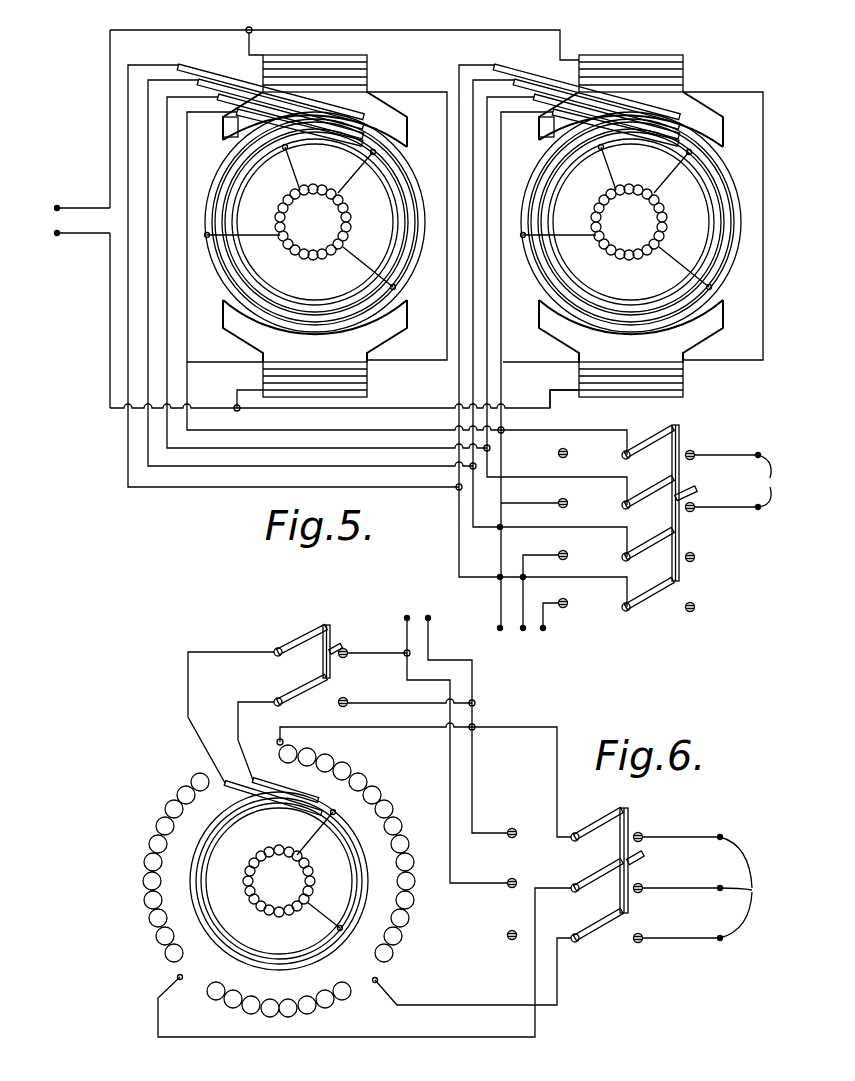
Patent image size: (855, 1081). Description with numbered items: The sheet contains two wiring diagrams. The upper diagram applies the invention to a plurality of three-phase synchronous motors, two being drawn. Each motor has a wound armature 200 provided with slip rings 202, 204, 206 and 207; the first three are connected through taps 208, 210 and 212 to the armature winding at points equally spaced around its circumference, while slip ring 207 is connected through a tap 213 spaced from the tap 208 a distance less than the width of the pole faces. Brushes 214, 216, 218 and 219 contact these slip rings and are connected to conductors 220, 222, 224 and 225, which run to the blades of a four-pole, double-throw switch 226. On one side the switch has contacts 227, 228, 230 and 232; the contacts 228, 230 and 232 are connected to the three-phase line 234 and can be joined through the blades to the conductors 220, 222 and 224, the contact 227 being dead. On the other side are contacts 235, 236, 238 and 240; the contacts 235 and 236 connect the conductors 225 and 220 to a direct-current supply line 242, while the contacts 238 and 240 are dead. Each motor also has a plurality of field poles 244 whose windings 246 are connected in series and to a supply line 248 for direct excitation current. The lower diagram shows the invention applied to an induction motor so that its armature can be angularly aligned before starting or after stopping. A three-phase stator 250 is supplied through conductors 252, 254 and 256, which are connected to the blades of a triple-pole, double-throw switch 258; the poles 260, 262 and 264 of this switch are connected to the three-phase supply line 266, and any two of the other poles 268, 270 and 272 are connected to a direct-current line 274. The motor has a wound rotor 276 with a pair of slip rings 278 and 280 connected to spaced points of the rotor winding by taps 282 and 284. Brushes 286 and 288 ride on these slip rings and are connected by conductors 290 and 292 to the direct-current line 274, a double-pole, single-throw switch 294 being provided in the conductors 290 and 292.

In FIG. 5, the wound armature 200 is at (350, 223).
In FIG. 5, the slip ring 202 is at (255, 292).
In FIG. 5, the slip ring 204 is at (318, 328).
In FIG. 5, the slip ring 206 is at (213, 186).
In FIG. 5, the slip ring 207 is at (243, 265).
In FIG. 5, the tap 208 is at (346, 184).
In FIG. 5, the tap 210 is at (372, 268).
In FIG. 5, the tap 212 is at (261, 234).
In FIG. 5, the tap 213 is at (294, 158).
In FIG. 5, the brush 214 is at (238, 108).
In FIG. 5, the brush 216 is at (212, 80).
In FIG. 5, the brush 218 is at (182, 62).
In FIG. 5, the brush 219 is at (232, 137).
In FIG. 5, the conductor 220 is at (168, 354).
In FIG. 5, the conductor 222 is at (147, 434).
In FIG. 5, the conductor 224 is at (128, 455).
In FIG. 5, the conductor 225 is at (187, 377).
In FIG. 5, the four-pole, double-throw switch 226 is at (677, 432).
In FIG. 5, the contact 227 is at (557, 453).
In FIG. 5, the contact 228 is at (557, 500).
In FIG. 5, the contact 230 is at (558, 552).
In FIG. 5, the contact 232 is at (566, 608).
In FIG. 5, the three-phase line 234 is at (500, 628).
In FIG. 5, the contact 235 is at (696, 452).
In FIG. 5, the contact 236 is at (694, 511).
In FIG. 5, the contact 238 is at (694, 560).
In FIG. 5, the contact 240 is at (694, 611).
In FIG. 5, the D. C. supply line 242 is at (778, 481).
In FIG. 5, the field pole 244 is at (362, 60).
In FIG. 5, the field winding 246 is at (372, 80).
In FIG. 5, the supply line 248 is at (52, 207).
In FIG. 6, the three-phase stator 250 is at (380, 792).
In FIG. 6, the conductor 252 is at (192, 1038).
In FIG. 6, the conductor 254 is at (437, 1003).
In FIG. 6, the conductor 256 is at (355, 730).
In FIG. 6, the triple-pole, double-throw switch 258 is at (630, 816).
In FIG. 6, the pole 260 is at (642, 842).
In FIG. 6, the pole 262 is at (642, 893).
In FIG. 6, the pole 264 is at (642, 945).
In FIG. 6, the three-phase supply line 266 is at (754, 887).
In FIG. 6, the pole 268 is at (510, 938).
In FIG. 6, the pole 270 is at (511, 890).
In FIG. 6, the pole 272 is at (512, 840).
In FIG. 6, the direct-current line 274 is at (421, 600).
In FIG. 6, the wound rotor 276 is at (258, 910).
In FIG. 6, the slip ring 278 is at (220, 933).
In FIG. 6, the slip ring 280 is at (258, 972).
In FIG. 6, the tap 282 is at (318, 911).
In FIG. 6, the tap 284 is at (310, 840).
In FIG. 6, the brush 286 is at (216, 794).
In FIG. 6, the brush 288 is at (296, 794).
In FIG. 6, the conductor 290 is at (185, 720).
In FIG. 6, the conductor 292 is at (236, 728).
In FIG. 6, the double-pole, single-throw switch 294 is at (318, 630).